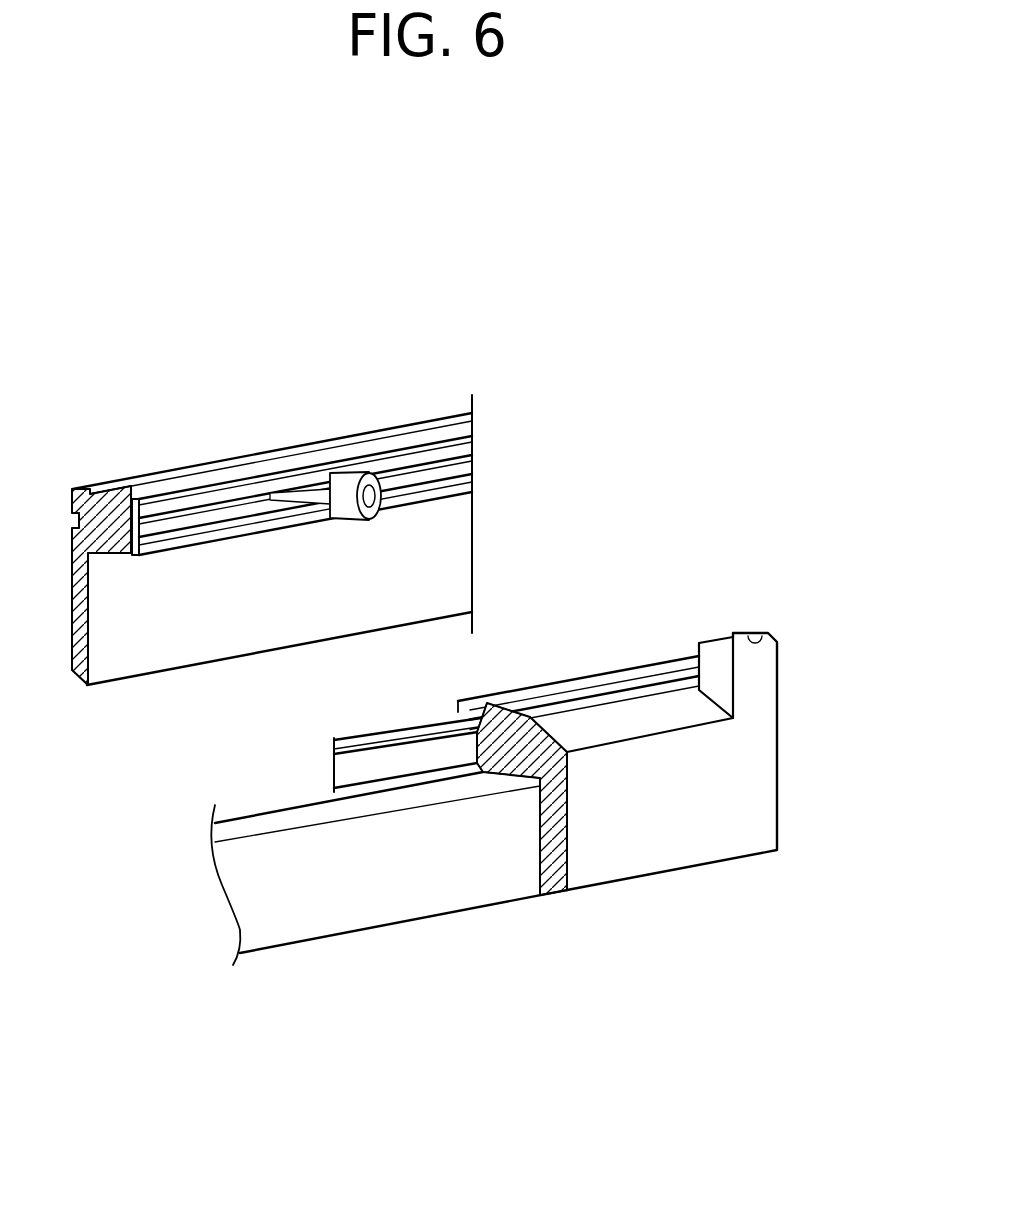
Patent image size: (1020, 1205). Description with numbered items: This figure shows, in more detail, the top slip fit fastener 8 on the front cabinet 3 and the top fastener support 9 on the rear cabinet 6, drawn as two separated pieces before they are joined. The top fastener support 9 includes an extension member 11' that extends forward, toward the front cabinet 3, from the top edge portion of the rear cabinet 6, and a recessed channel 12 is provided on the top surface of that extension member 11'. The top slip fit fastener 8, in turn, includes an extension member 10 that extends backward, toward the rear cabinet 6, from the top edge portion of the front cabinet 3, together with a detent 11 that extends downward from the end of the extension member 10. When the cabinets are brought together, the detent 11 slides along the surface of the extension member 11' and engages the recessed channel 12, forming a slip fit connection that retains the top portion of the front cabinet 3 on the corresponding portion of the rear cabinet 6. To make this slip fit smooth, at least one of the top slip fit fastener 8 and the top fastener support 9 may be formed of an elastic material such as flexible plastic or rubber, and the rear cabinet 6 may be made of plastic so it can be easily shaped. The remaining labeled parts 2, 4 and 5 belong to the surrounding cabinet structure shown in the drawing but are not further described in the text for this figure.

The guide rail 2 is at (358, 742).
The front cabinet 3 is at (223, 447).
The rail front face 4 is at (420, 765).
The base body 5 is at (377, 910).
The rear cabinet 6 is at (792, 758).
The top slip fit fastener 8 is at (234, 556).
The top fastener support 9 is at (633, 655).
The extension member 10 is at (103, 512).
The detent 11 is at (130, 628).
The extension member 11' is at (467, 769).
The recessed channel 12 is at (608, 688).